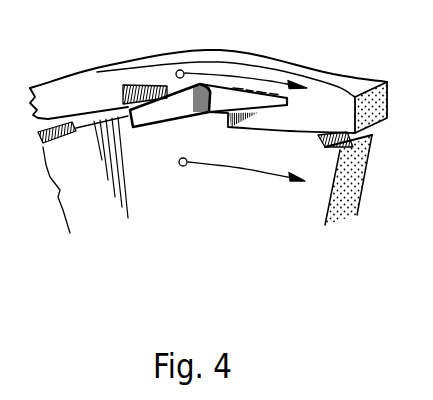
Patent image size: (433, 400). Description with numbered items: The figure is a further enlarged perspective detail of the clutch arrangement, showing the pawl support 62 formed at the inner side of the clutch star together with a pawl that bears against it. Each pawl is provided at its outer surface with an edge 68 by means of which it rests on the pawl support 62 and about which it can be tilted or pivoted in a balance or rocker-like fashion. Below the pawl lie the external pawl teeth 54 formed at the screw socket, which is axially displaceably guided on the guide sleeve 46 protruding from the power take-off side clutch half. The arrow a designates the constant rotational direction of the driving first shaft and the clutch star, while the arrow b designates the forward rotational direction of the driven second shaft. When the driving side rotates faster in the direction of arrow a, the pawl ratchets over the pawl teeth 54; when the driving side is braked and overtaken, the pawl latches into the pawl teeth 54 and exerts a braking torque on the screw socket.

The pawl support 62 is at (65, 95).
The edge 68 is at (207, 112).
The guide sleeve 46 is at (78, 202).
The pawl teeth 54 is at (297, 142).
The arrow a is at (253, 77).
The arrow b is at (240, 170).